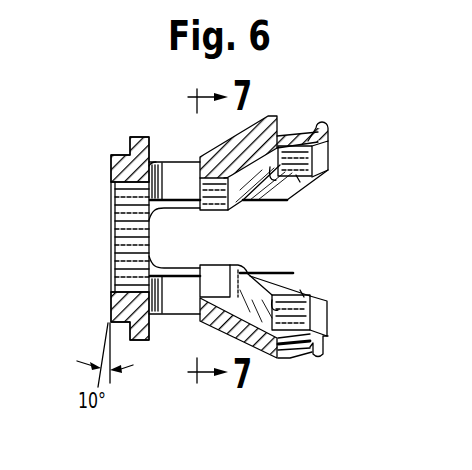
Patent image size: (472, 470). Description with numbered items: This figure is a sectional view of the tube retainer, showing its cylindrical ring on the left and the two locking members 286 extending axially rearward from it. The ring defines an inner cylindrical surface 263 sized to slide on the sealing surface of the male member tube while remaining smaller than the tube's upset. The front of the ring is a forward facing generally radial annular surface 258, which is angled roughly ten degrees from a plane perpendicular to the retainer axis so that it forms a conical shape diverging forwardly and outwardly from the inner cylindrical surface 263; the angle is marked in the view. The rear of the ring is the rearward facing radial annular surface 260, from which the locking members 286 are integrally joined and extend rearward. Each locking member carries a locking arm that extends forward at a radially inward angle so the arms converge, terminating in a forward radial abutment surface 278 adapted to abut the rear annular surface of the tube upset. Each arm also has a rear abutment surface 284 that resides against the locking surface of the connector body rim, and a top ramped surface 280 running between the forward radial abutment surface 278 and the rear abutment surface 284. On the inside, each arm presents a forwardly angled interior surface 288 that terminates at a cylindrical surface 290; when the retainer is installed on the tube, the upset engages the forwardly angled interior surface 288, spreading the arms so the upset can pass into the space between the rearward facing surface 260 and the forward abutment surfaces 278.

The forward facing generally radial annular surface 258 is at (116, 303).
The rearward facing radial annular surface 260 is at (152, 143).
The inner cylindrical surface 263 is at (127, 258).
The forward radial abutment surface 278 is at (197, 172).
The top ramped surface 280 is at (258, 120).
The rear abutment surface 284 is at (280, 352).
The locking member 286 is at (343, 130).
The forwardly angled interior surface 288 is at (256, 181).
The cylindrical surface 290 is at (220, 207).